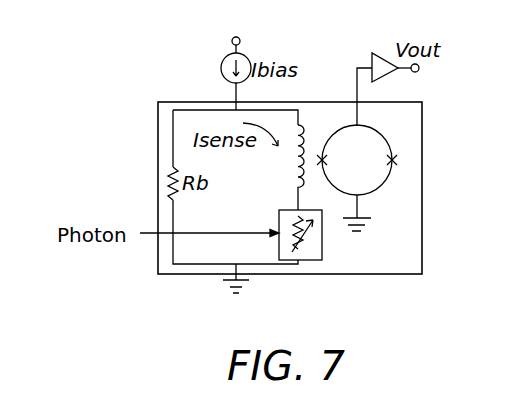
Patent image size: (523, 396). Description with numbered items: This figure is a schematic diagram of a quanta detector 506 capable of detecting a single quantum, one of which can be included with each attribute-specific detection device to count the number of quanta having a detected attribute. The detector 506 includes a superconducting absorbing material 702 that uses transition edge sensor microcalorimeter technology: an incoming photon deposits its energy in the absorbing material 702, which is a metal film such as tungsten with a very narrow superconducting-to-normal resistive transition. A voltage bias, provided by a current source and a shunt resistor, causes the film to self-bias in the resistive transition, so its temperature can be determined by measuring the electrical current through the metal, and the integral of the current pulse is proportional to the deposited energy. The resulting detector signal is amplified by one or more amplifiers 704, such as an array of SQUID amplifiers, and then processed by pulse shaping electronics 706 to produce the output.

The quanta detector 506 is at (112, 59).
The superconducting absorbing material 702 is at (322, 257).
The amplifiers 704 is at (387, 180).
The pulse shaping electronics 706 is at (375, 53).